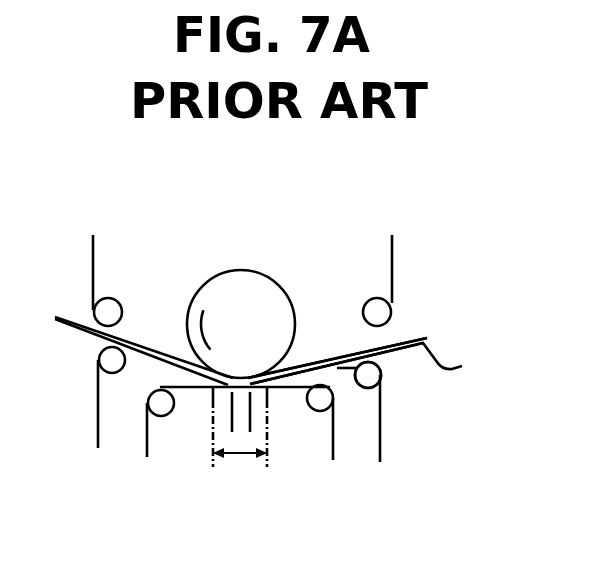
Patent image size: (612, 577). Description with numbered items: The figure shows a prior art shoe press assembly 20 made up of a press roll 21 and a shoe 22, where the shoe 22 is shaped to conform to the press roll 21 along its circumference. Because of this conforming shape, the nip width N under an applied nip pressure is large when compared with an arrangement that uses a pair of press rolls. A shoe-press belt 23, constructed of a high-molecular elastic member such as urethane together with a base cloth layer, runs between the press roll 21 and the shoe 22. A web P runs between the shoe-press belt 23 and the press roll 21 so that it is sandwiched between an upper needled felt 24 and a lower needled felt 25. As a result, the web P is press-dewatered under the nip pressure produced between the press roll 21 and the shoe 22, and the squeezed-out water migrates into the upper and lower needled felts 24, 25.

The shoe press assembly 20 is at (312, 264).
The press roll 21 is at (222, 288).
The shoe 22 is at (265, 410).
The shoe-press belt 23 is at (198, 388).
The upper needled felt 24 is at (397, 327).
The lower needled felt 25 is at (338, 370).
The web P is at (374, 363).
The nip width N is at (240, 455).